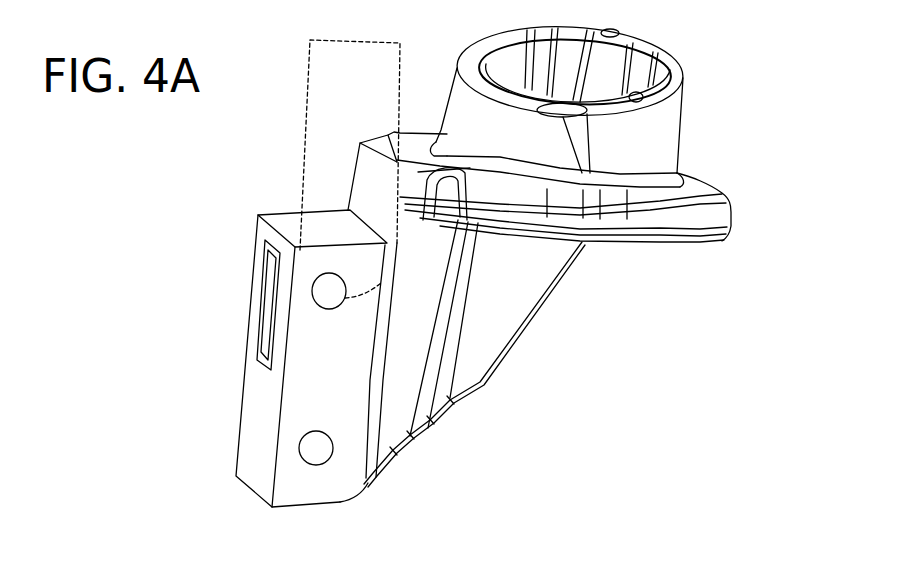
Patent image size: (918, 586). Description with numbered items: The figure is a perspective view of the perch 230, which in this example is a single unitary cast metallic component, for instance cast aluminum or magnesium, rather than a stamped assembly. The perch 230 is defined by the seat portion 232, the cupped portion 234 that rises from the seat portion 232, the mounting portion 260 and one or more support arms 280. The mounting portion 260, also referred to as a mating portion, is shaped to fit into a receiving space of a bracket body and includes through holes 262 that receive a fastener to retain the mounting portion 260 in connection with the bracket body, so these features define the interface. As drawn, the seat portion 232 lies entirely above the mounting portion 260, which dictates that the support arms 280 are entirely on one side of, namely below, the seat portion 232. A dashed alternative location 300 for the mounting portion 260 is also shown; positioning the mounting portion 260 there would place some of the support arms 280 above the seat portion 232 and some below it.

The perch 230 is at (634, 419).
The seat portion 232 is at (539, 251).
The cupped portion 234 is at (583, 91).
The mounting portion 260 is at (275, 358).
The through holes 262 is at (271, 388).
The support arms 280 is at (474, 364).
The alternative location 300 is at (286, 145).